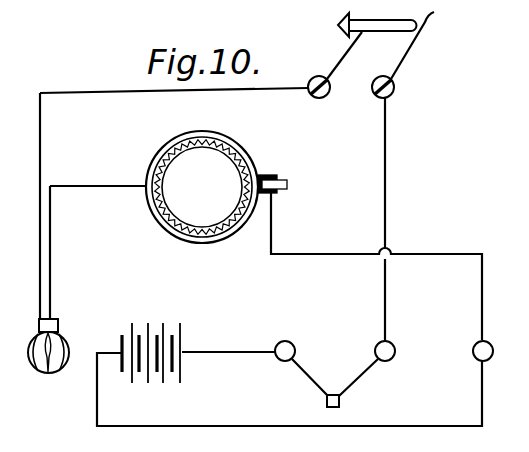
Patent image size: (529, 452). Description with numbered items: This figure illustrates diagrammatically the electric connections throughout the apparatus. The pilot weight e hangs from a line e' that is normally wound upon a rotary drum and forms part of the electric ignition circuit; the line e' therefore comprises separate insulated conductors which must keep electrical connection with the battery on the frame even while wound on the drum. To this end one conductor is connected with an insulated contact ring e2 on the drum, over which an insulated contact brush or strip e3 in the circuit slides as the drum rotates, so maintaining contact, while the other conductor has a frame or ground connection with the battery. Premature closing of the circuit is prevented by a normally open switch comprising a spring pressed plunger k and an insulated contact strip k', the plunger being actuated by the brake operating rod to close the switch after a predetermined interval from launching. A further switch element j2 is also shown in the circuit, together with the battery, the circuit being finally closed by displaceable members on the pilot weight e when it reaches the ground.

The pilot weight e is at (45, 361).
The line e' is at (29, 206).
The insulated contact ring e2 is at (173, 232).
The insulated contact brush e3 is at (288, 183).
The switch j2 is at (360, 375).
The spring pressed plunger k is at (362, 55).
The insulated contact strip k' is at (406, 55).